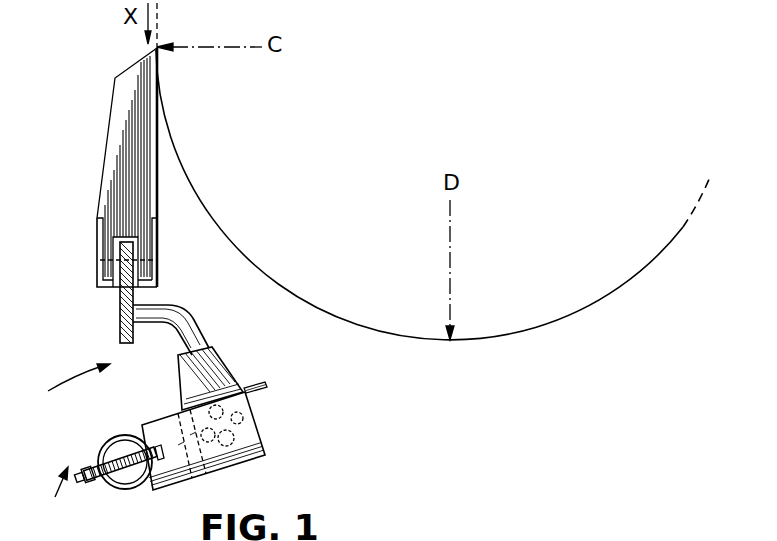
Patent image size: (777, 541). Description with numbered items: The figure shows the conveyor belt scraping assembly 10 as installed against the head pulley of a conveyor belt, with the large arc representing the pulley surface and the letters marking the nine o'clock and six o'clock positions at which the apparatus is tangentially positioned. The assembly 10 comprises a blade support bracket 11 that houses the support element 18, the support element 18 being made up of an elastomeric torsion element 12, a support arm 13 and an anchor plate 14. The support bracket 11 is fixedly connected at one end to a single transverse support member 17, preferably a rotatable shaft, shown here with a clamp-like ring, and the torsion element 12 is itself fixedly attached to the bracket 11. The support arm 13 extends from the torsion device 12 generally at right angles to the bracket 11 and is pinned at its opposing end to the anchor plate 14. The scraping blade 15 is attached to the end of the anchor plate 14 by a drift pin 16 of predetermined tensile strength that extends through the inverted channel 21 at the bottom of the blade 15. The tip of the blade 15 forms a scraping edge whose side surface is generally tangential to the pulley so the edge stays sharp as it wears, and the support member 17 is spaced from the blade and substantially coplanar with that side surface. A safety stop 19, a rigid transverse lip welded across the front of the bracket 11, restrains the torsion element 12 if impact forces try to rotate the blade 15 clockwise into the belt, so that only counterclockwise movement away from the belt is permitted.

The conveyor belt scraping assembly 10 is at (50, 496).
The blade support bracket 11 is at (255, 455).
The elastomeric torsion element 12 is at (246, 428).
The support arm 13 is at (187, 318).
The anchor plate 14 is at (137, 297).
The scraping blade 15 is at (142, 140).
The drift pin 16 is at (98, 268).
The transverse support member 17 is at (99, 446).
The support element 18 is at (64, 382).
The safety stop 19 is at (254, 391).
The inverted channel 21 is at (98, 228).